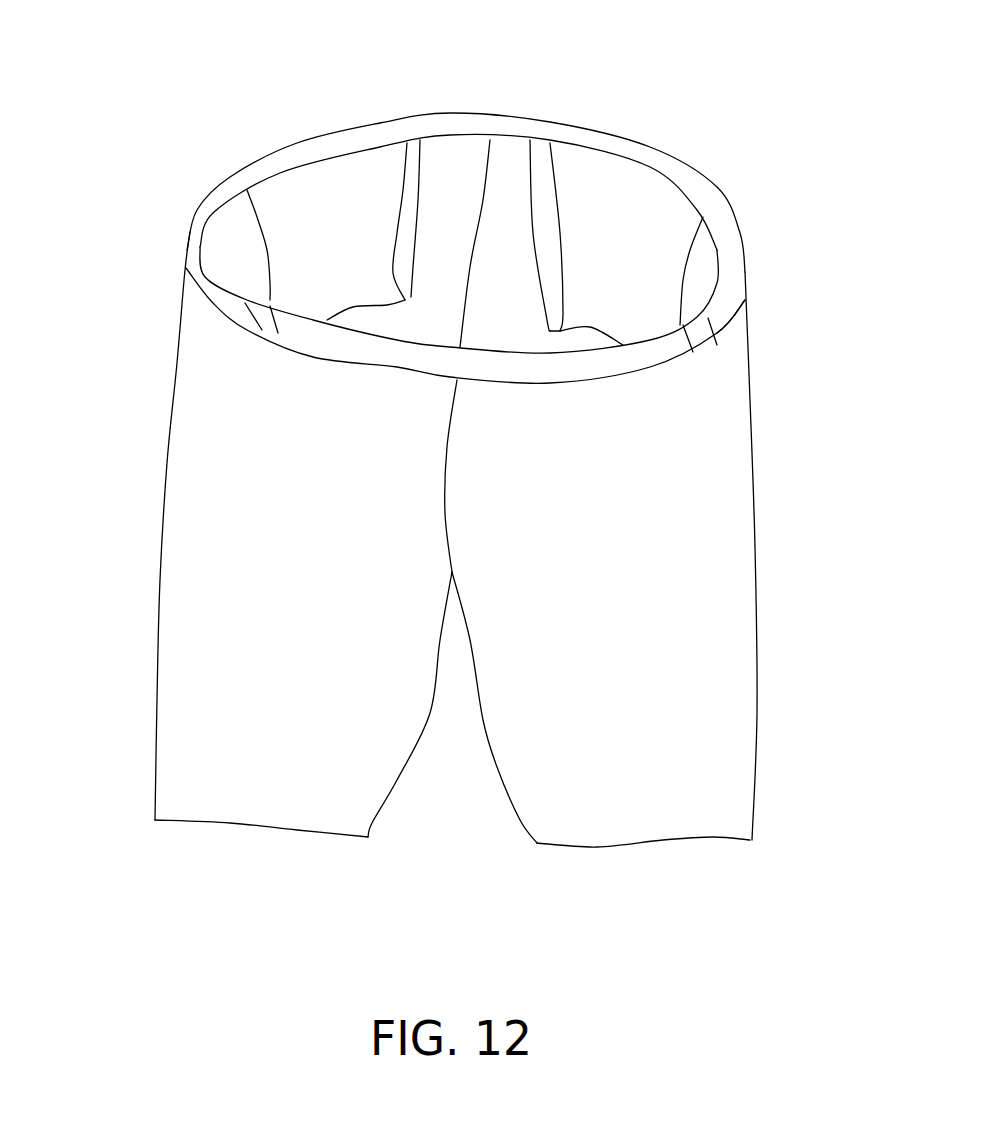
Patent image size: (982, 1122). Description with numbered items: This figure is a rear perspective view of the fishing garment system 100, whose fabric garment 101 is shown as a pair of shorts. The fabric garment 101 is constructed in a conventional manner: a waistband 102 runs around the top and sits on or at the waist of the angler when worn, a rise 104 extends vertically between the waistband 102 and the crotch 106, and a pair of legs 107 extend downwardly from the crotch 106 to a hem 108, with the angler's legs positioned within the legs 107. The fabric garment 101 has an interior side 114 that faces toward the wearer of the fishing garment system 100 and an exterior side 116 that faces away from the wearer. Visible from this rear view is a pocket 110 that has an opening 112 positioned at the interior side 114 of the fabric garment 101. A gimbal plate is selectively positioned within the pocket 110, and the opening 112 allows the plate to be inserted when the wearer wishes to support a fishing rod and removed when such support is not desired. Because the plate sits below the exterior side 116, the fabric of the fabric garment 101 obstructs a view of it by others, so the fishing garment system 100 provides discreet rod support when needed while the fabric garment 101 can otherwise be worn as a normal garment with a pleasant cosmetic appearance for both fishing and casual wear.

The fishing garment system 100 is at (722, 129).
The fabric garment 101 is at (165, 493).
The waistband 102 is at (197, 268).
The rise 104 is at (637, 467).
The crotch 106 is at (455, 572).
The legs 107 is at (253, 730).
The hem 108 is at (752, 840).
The pocket 110 is at (330, 207).
The opening 112 is at (420, 166).
The interior side 114 is at (708, 252).
The exterior side 116 is at (714, 380).